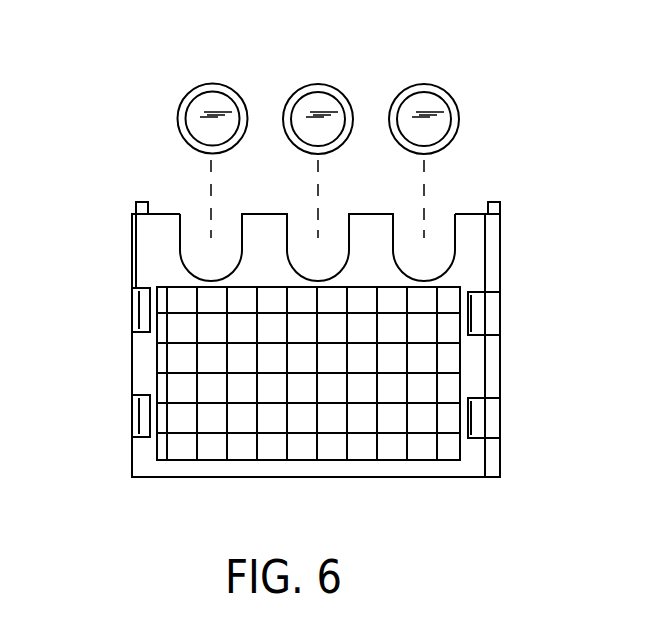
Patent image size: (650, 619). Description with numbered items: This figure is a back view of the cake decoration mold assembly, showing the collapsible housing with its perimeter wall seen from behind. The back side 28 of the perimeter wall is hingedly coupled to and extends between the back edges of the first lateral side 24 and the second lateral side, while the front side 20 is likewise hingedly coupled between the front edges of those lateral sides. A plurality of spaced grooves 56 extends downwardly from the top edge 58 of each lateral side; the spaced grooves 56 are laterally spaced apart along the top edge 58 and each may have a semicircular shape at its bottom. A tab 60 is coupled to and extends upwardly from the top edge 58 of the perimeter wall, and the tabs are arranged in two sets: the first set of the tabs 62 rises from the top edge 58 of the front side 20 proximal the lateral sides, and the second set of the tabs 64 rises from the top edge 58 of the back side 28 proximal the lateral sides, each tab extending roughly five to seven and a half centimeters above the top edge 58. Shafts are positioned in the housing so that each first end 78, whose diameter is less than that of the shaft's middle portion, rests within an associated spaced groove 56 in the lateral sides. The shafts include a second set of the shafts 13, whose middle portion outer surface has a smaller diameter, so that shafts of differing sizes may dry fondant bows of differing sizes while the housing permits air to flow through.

The second set of the shafts 13 is at (427, 83).
The first end 78 is at (210, 83).
The front side 20 is at (502, 365).
The first lateral side 24 is at (457, 470).
The back side 28 is at (132, 357).
The spaced grooves 56 is at (190, 270).
The top edge 58 is at (468, 213).
The tab 60 is at (129, 197).
The first set of the tabs 62 is at (500, 205).
The second set of the tabs 64 is at (134, 198).